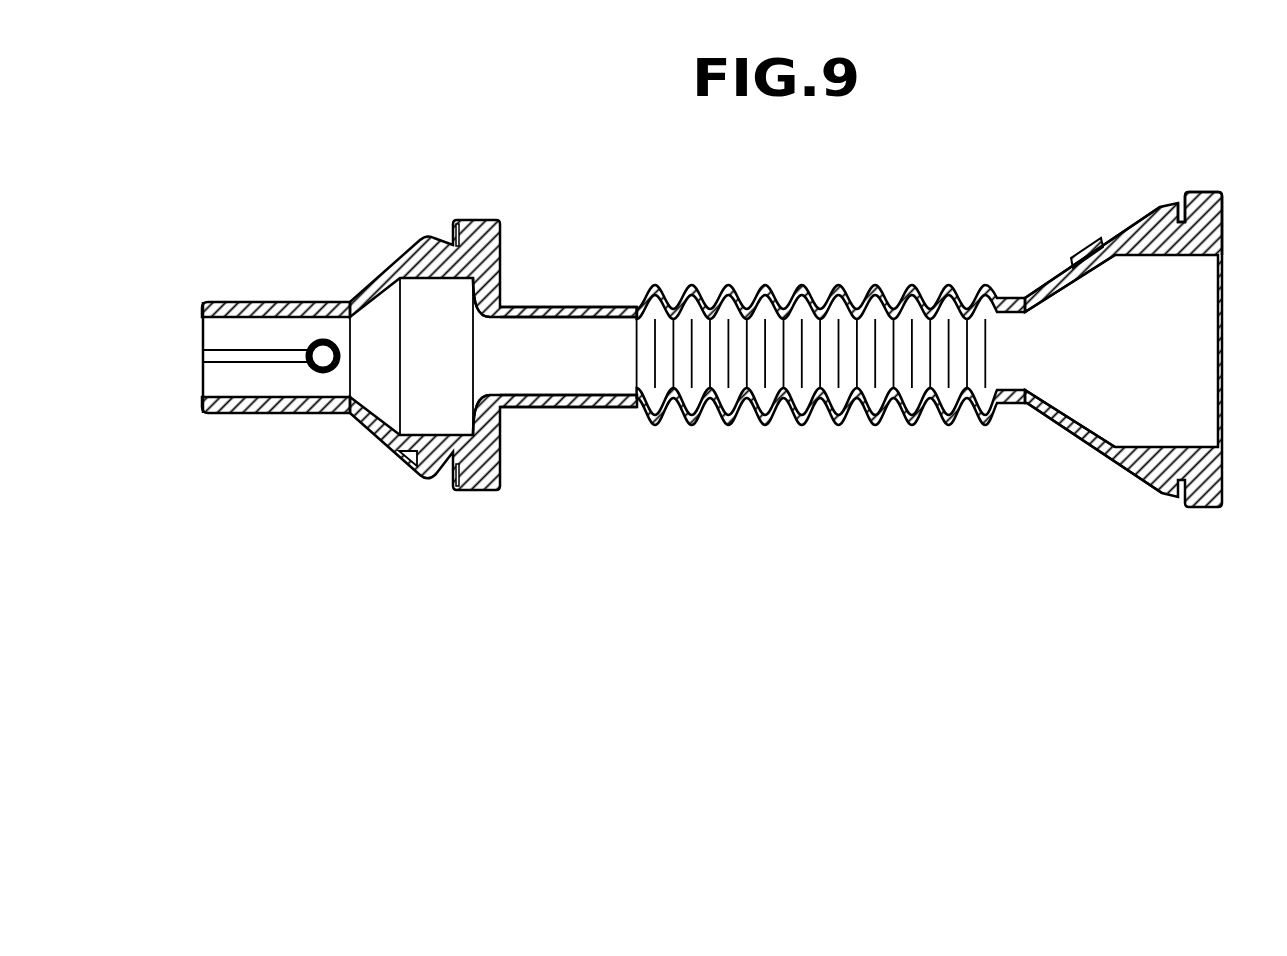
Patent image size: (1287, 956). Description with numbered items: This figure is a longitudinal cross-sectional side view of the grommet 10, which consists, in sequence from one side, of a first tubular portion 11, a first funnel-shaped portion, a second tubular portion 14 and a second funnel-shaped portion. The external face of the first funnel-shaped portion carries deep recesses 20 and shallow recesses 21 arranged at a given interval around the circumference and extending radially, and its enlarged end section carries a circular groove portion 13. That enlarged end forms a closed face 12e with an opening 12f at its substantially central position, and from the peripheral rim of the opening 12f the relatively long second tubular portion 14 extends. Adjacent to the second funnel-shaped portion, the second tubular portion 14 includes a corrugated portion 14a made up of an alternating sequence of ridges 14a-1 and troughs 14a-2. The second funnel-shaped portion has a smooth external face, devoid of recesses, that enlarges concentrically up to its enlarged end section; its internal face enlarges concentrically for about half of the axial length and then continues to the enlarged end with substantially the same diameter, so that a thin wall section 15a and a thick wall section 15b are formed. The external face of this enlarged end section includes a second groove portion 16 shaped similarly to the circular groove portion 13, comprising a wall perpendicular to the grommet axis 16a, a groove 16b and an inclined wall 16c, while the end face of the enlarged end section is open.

The grommet 10 is at (329, 276).
The first tubular portion 11 is at (223, 413).
The shallow recesses 21 is at (363, 437).
The deep recesses 20 is at (410, 462).
The circular groove portion 13 is at (447, 238).
The closed face 12e is at (500, 268).
The opening 12f is at (484, 360).
The second tubular portion 14 is at (628, 410).
The corrugated portion 14a is at (988, 543).
The ridges 14a-1 is at (765, 428).
The troughs 14a-2 is at (895, 430).
The thin wall section 15a is at (1070, 438).
The thick wall section 15b is at (1140, 488).
The second groove portion 16 is at (1168, 503).
The wall perpendicular to the grommet axis 16a is at (1200, 192).
The groove 16b is at (1175, 212).
The inclined wall 16c is at (1172, 207).